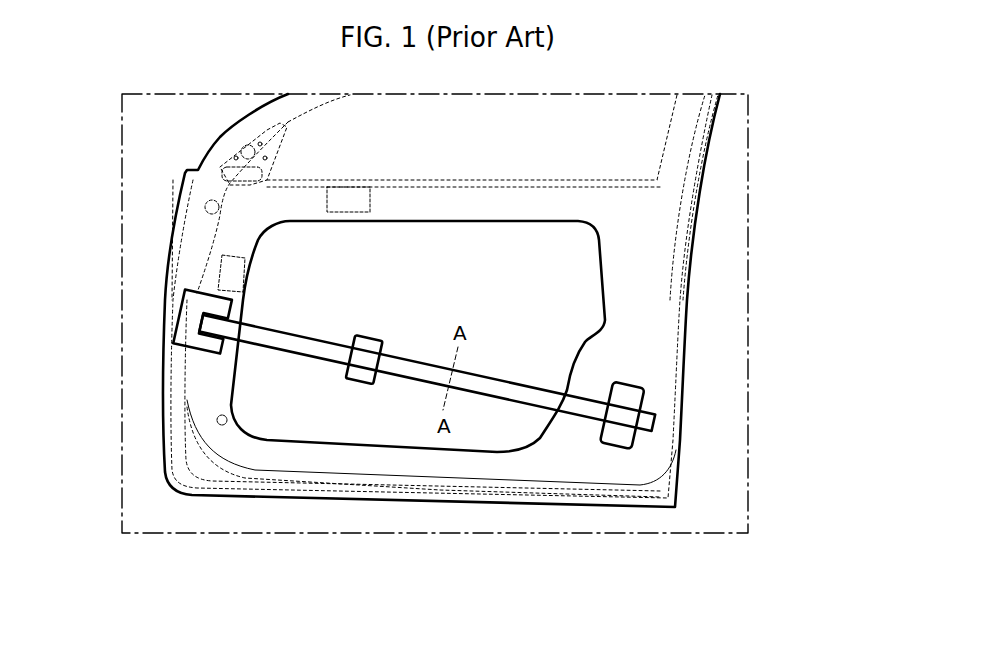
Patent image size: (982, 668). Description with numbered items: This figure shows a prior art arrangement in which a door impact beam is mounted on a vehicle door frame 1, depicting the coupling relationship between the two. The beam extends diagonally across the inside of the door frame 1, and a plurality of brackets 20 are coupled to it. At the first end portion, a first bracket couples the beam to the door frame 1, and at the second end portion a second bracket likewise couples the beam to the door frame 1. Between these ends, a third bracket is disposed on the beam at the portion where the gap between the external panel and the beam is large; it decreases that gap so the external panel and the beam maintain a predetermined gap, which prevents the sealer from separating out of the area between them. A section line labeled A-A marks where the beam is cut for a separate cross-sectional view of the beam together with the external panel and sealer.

The door frame 1 is at (650, 233).
The brackets 20 is at (510, 465).